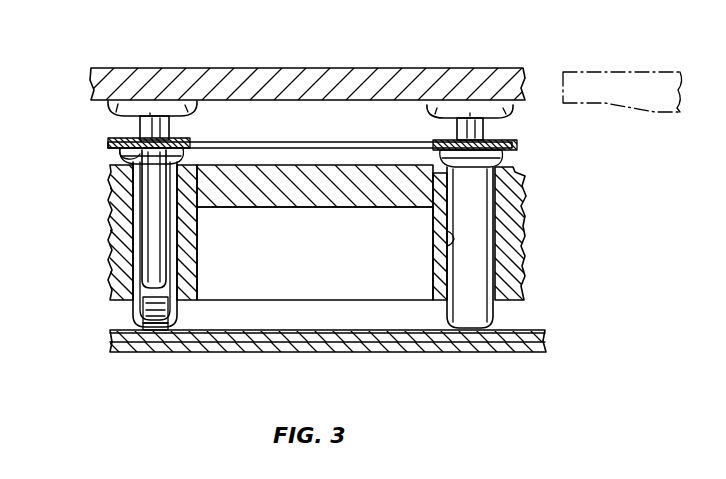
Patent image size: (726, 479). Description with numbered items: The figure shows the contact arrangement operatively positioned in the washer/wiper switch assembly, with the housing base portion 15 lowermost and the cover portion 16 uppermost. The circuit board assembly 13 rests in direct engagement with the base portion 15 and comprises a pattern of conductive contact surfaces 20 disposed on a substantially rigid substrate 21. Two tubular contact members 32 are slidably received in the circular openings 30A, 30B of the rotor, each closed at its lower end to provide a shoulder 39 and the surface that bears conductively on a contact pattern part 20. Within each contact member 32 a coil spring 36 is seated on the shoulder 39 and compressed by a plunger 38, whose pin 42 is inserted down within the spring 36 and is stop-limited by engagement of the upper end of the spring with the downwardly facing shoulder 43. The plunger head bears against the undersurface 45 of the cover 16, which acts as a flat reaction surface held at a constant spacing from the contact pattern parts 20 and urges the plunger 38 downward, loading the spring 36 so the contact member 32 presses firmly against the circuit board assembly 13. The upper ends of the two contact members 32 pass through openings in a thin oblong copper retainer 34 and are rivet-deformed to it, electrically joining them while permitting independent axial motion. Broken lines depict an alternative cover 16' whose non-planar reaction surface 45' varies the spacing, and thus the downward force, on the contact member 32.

The circuit board assembly 13 is at (548, 334).
The base portion 15 is at (326, 351).
The cover portion 16 is at (302, 70).
The cover 16' is at (622, 77).
The conductive contact surfaces 20 is at (266, 328).
The substrate 21 is at (321, 328).
The circular opening 30A is at (132, 303).
The circular opening 30B is at (450, 238).
The contact member 32 is at (175, 308).
The retainer 34 is at (360, 147).
The spring 36 is at (164, 331).
The plunger 38 is at (172, 126).
The shoulder 39 is at (139, 300).
The pin 42 is at (147, 193).
The shoulder 43 is at (150, 152).
The undersurface 45 is at (324, 113).
The reaction surface 45' is at (636, 125).